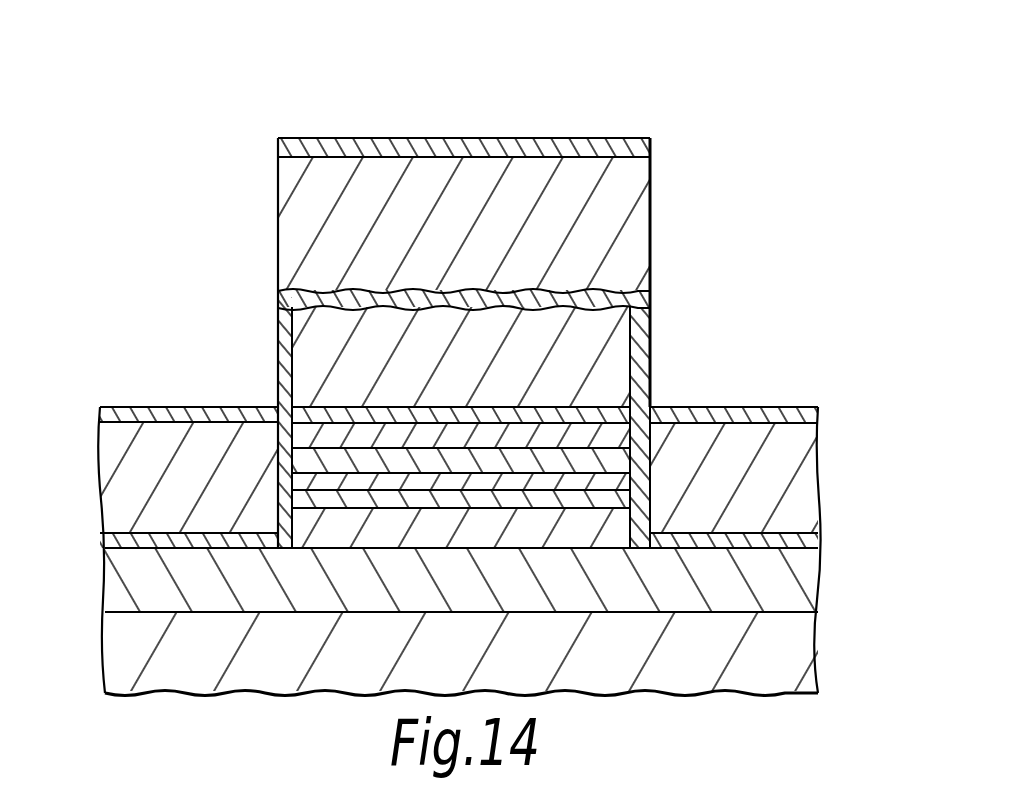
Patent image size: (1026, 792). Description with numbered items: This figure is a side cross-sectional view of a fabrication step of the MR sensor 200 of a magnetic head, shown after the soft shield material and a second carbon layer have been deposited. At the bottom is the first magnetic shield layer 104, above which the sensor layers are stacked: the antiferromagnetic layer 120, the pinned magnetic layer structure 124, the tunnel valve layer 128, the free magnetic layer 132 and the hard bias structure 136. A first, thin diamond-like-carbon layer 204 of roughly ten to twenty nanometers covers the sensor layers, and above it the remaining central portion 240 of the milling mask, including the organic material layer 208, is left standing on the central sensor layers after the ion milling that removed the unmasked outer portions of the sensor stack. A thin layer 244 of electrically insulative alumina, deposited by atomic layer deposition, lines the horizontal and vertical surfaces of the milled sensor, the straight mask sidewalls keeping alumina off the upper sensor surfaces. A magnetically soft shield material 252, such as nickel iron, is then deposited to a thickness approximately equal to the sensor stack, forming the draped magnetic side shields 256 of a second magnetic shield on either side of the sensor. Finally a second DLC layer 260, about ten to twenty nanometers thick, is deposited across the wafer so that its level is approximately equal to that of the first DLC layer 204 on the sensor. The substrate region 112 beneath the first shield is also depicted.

The MR sensor 200 is at (168, 238).
The second DLC layer 260 is at (563, 147).
The soft magnetic material 252 is at (618, 198).
The draped magnetic side shields 256 is at (797, 455).
The alumina insulation layer 244 is at (115, 540).
The remaining milling mask portion 240 is at (318, 349).
The organic material layer 208 is at (612, 327).
The first DLC layer 204 is at (593, 407).
The hard bias structure 136 is at (650, 447).
The free magnetic layer 132 is at (303, 460).
The tunnel valve layer 128 is at (648, 480).
The pinned magnetic layer structure 124 is at (303, 497).
The antiferromagnetic layer 120 is at (545, 533).
The first magnetic shield layer 104 is at (788, 585).
The substrate 112 is at (783, 653).